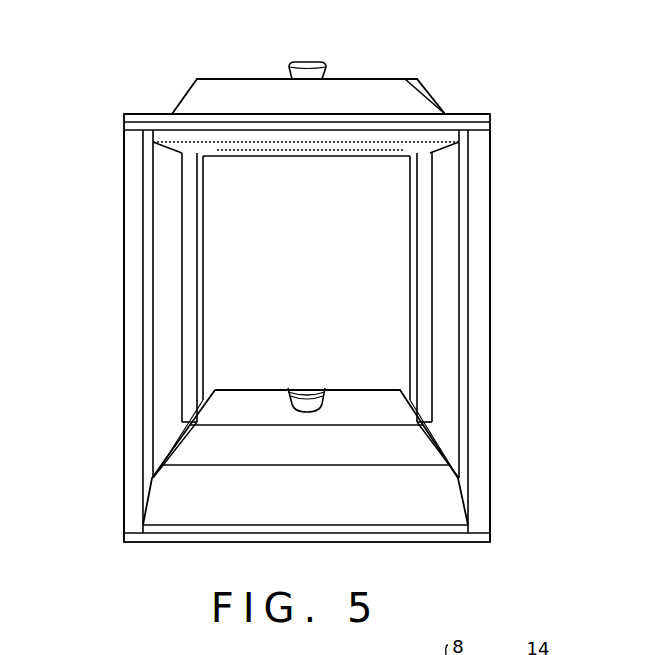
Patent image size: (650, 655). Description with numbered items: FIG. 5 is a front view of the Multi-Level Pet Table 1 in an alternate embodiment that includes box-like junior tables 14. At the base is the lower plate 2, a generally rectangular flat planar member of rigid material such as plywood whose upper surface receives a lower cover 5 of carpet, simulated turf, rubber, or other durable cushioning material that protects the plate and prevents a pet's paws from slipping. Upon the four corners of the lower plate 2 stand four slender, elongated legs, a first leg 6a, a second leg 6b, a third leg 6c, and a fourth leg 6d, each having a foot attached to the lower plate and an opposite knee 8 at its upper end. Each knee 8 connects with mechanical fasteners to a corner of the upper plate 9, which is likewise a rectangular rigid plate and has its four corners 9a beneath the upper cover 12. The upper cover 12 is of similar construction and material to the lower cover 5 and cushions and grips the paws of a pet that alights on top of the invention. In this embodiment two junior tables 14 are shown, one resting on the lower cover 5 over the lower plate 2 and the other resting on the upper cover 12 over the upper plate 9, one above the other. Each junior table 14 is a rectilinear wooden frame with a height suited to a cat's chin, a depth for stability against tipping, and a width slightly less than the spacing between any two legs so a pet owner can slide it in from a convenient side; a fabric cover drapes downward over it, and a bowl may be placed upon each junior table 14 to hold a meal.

The Multi-Level Pet Table 1 is at (100, 330).
The lower plate 2 is at (390, 535).
The lower cover 5 is at (352, 113).
The first leg 6a is at (124, 262).
The second leg 6b is at (490, 283).
The third leg 6c is at (203, 277).
The fourth leg 6d is at (410, 298).
The knee 8 is at (315, 62).
The upper plate 9 is at (303, 145).
The corners of the upper plate 9a is at (124, 117).
The upper cover 12 is at (455, 113).
The junior table 14 is at (408, 97).